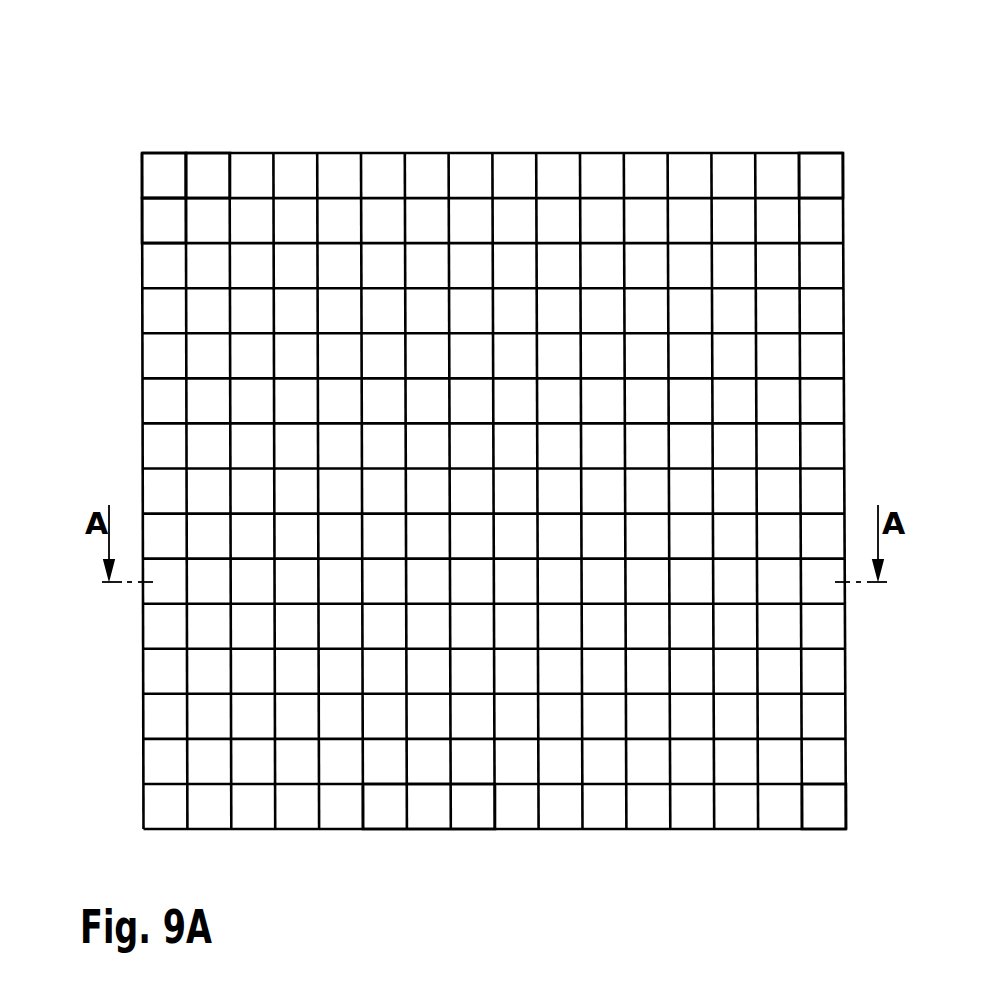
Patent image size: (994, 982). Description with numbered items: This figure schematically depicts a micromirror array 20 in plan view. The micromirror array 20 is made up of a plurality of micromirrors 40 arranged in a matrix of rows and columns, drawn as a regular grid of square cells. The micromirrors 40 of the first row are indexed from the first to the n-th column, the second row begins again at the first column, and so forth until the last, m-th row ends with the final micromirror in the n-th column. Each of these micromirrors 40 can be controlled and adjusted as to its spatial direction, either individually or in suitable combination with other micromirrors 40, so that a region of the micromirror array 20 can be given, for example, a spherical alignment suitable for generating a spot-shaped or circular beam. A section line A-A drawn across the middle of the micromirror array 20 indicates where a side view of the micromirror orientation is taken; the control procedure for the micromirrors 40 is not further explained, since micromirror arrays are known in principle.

The micromirror array 20 is at (565, 130).
The micromirrors 40 is at (473, 813).